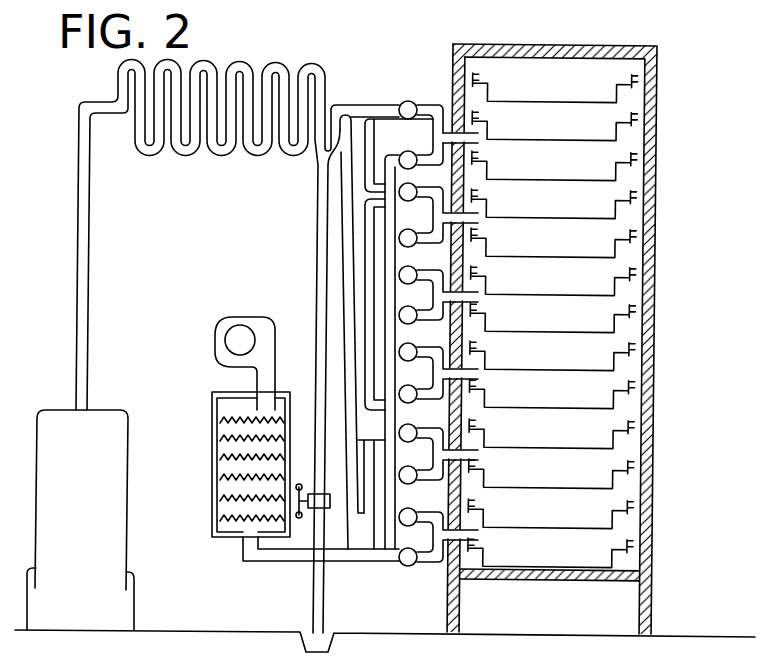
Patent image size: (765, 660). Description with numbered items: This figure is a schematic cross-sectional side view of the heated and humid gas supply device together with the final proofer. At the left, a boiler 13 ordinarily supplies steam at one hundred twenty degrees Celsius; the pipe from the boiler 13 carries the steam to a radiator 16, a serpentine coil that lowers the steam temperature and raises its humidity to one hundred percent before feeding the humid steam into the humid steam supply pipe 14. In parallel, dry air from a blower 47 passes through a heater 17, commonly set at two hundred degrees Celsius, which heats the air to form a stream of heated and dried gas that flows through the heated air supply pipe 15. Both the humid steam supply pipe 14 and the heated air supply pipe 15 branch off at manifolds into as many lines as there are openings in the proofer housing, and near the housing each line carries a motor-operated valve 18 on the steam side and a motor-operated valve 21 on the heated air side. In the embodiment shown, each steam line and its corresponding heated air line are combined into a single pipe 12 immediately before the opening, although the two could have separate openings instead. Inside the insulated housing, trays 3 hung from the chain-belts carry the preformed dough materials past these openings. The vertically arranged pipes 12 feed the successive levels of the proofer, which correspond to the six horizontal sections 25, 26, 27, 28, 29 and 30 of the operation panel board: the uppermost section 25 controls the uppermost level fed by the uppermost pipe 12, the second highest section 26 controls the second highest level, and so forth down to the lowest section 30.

The trays 3 is at (560, 104).
The single pipe 12 is at (468, 140).
The boiler 13 is at (116, 499).
The humid steam supply pipe 14 is at (369, 106).
The heated air supply pipe 15 is at (384, 552).
The radiator 16 is at (308, 72).
The heater 17 is at (236, 444).
The motor-operated valve 18 is at (410, 100).
The motor-operated valve 21 is at (402, 152).
The uppermost section 25 is at (596, 107).
The second highest section 26 is at (656, 220).
The section 27 is at (655, 297).
The section 28 is at (655, 372).
The section 29 is at (654, 448).
The section 30 is at (653, 532).
The blower 47 is at (237, 317).